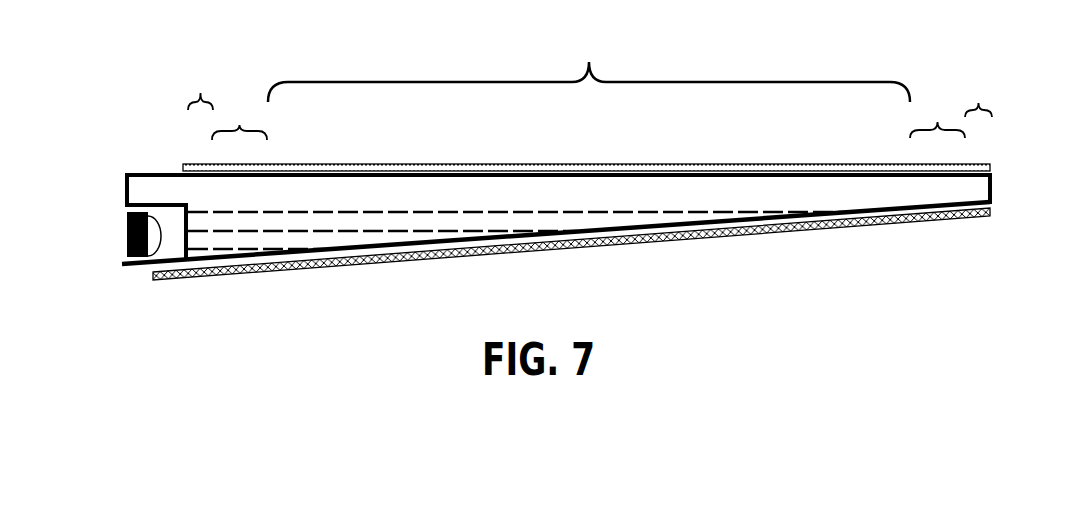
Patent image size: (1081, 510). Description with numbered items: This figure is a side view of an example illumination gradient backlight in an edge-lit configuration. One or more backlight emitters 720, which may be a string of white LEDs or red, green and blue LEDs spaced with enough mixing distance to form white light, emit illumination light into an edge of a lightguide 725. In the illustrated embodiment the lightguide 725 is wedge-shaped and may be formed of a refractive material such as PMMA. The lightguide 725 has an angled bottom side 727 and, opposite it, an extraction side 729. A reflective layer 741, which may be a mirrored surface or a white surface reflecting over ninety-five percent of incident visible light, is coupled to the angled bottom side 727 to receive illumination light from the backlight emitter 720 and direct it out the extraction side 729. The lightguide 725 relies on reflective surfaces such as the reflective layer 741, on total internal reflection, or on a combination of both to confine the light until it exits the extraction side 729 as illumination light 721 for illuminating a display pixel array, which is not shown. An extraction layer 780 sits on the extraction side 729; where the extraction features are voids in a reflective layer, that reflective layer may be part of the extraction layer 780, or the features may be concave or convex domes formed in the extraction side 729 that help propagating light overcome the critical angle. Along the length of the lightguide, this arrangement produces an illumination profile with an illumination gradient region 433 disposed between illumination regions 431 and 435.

The extraction side 729 is at (137, 166).
The backlight emitter 720 is at (127, 248).
The angled bottom side 727 is at (114, 268).
The reflective layer 741 is at (153, 277).
The extraction layer 780 is at (1005, 167).
The lightguide 725 is at (1005, 186).
The illumination light 721 is at (358, 248).
The illumination region 431 is at (588, 88).
The illumination gradient region 433 is at (588, 115).
The illumination region 435 is at (589, 67).